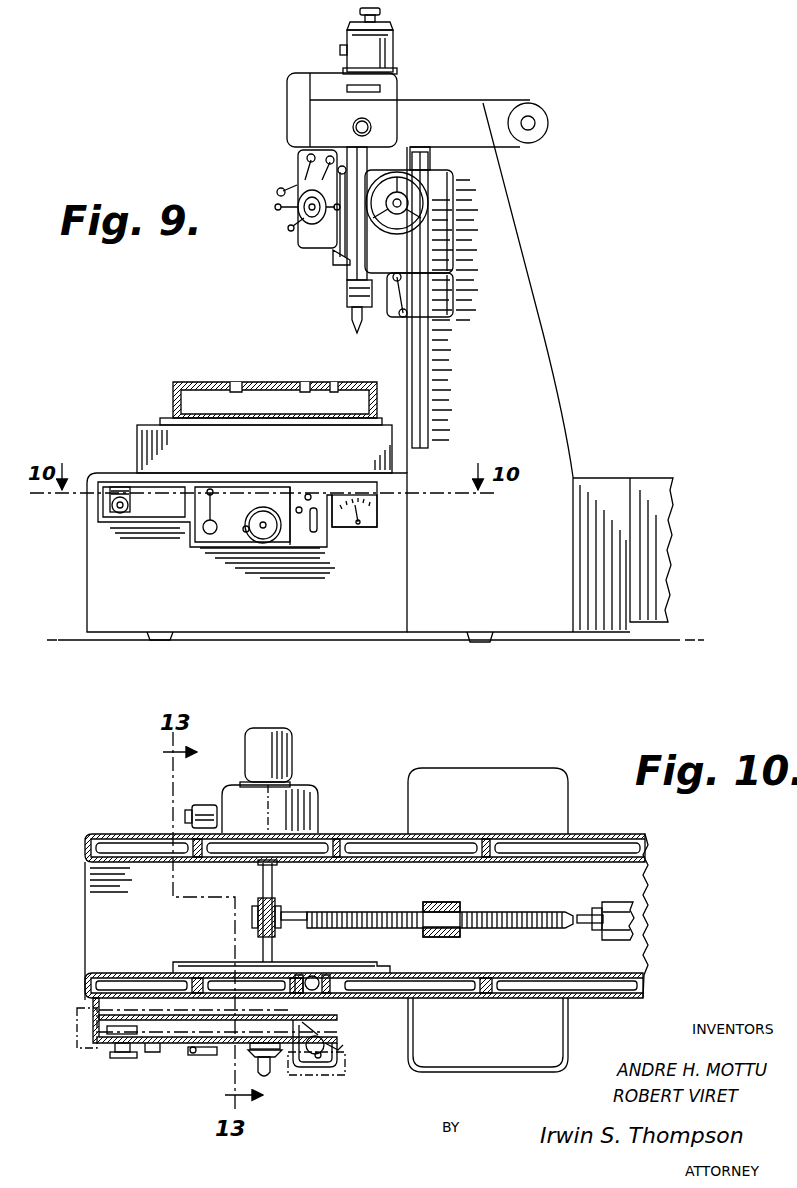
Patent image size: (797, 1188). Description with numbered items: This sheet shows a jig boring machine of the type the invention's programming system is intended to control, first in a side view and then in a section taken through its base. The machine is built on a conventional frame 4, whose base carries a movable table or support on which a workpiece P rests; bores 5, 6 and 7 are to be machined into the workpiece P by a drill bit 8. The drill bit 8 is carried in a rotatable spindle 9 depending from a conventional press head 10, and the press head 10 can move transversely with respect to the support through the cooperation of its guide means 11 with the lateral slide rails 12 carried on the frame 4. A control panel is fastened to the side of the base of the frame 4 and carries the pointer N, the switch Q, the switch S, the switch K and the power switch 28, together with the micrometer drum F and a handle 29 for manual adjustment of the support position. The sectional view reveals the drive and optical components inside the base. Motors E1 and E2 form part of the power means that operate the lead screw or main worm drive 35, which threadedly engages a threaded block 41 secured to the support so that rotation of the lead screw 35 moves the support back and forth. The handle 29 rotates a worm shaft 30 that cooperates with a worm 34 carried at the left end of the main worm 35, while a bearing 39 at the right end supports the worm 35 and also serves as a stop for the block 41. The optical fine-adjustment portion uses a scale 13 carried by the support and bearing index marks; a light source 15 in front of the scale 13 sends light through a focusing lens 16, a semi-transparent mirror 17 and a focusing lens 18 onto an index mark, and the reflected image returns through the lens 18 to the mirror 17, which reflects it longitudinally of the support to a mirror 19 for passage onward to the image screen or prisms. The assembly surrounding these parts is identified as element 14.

In FIG. 9, the frame 4 is at (555, 413).
In FIG. 10, the frame 4 is at (398, 863).
In FIG. 9, the bore 5 is at (240, 382).
In FIG. 9, the bore 6 is at (310, 383).
In FIG. 9, the bore 7 is at (340, 383).
In FIG. 9, the drill bit 8 is at (350, 327).
In FIG. 9, the spindle 9 is at (343, 298).
In FIG. 9, the press head 10 is at (320, 123).
In FIG. 9, the guide means 11 is at (443, 217).
In FIG. 9, the lateral slide rails 12 is at (427, 392).
In FIG. 10, the scale 13 is at (350, 962).
In FIG. 10, the saddle 14 is at (85, 1050).
In FIG. 10, the light source 15 is at (325, 1063).
In FIG. 10, the focusing lens 16 is at (337, 1052).
In FIG. 10, the semi-transparent mirror 17 is at (343, 1033).
In FIG. 10, the focusing lens 18 is at (315, 978).
In FIG. 10, the mirror 19 is at (148, 1052).
In FIG. 9, the power switch 28 is at (207, 507).
In FIG. 10, the power switch 28 is at (193, 1056).
In FIG. 9, the handle 29 is at (258, 548).
In FIG. 10, the handle 29 is at (258, 1073).
In FIG. 10, the worm shaft 30 is at (273, 950).
In FIG. 10, the worm 34 is at (273, 905).
In FIG. 10, the lead screw 35 is at (370, 910).
In FIG. 10, the bearing 39 is at (623, 902).
In FIG. 10, the threaded block 41 is at (453, 903).
In FIG. 9, the workpiece P is at (210, 382).
In FIG. 9, the switch K is at (297, 505).
In FIG. 9, the switch S is at (308, 493).
In FIG. 9, the switch Q is at (316, 504).
In FIG. 9, the pointer N is at (357, 525).
In FIG. 9, the micrometer drum F is at (120, 513).
In FIG. 10, the micrometer drum F is at (118, 1060).
In FIG. 10, the motor E1 is at (293, 755).
In FIG. 10, the motor E2 is at (208, 805).